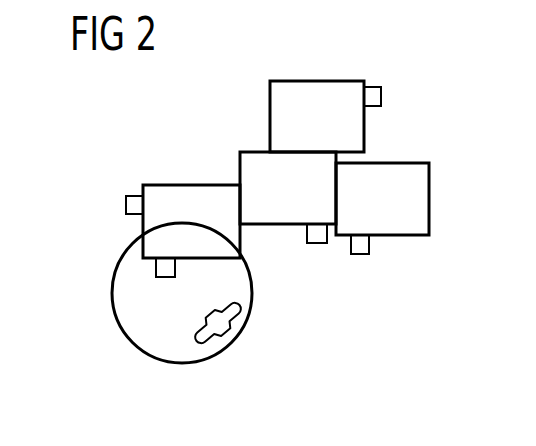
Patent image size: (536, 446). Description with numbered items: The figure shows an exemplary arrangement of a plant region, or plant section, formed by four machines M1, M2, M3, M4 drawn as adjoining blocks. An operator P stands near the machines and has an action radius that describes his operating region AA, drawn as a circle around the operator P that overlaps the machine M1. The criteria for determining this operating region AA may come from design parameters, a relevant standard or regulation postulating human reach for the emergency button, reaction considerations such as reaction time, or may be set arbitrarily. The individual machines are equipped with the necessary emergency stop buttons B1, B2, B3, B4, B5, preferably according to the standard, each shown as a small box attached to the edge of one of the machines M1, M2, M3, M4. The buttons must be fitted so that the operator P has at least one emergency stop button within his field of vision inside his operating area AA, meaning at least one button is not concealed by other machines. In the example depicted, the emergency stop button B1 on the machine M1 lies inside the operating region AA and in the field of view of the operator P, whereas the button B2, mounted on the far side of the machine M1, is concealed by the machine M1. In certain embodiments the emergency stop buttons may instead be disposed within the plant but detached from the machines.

The machine M1 is at (191, 221).
The machine M2 is at (288, 188).
The machine M3 is at (317, 116).
The machine M4 is at (382, 199).
The emergency stop button B1 is at (156, 268).
The emergency stop button B2 is at (128, 196).
The emergency stop button B3 is at (371, 88).
The emergency stop button B4 is at (362, 254).
The emergency stop button B5 is at (318, 243).
The operating region AA is at (123, 332).
The operator P is at (220, 328).